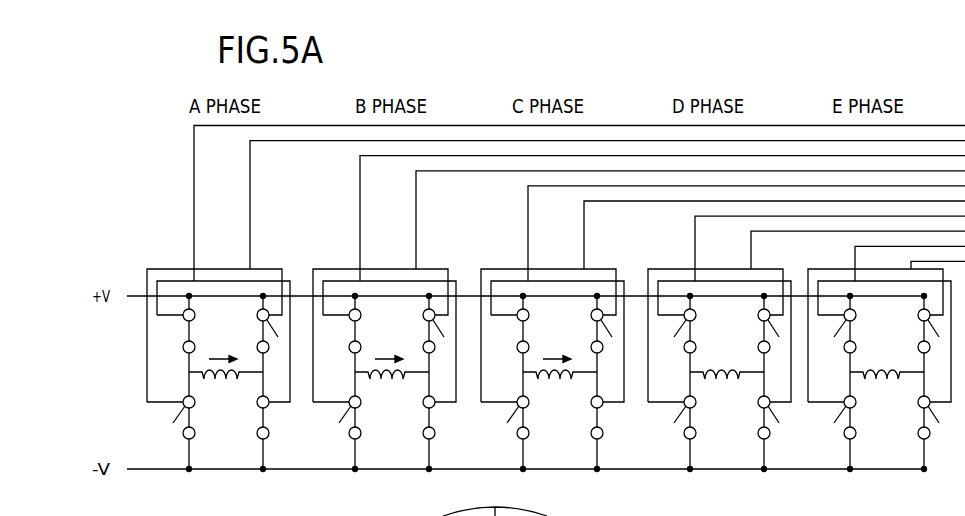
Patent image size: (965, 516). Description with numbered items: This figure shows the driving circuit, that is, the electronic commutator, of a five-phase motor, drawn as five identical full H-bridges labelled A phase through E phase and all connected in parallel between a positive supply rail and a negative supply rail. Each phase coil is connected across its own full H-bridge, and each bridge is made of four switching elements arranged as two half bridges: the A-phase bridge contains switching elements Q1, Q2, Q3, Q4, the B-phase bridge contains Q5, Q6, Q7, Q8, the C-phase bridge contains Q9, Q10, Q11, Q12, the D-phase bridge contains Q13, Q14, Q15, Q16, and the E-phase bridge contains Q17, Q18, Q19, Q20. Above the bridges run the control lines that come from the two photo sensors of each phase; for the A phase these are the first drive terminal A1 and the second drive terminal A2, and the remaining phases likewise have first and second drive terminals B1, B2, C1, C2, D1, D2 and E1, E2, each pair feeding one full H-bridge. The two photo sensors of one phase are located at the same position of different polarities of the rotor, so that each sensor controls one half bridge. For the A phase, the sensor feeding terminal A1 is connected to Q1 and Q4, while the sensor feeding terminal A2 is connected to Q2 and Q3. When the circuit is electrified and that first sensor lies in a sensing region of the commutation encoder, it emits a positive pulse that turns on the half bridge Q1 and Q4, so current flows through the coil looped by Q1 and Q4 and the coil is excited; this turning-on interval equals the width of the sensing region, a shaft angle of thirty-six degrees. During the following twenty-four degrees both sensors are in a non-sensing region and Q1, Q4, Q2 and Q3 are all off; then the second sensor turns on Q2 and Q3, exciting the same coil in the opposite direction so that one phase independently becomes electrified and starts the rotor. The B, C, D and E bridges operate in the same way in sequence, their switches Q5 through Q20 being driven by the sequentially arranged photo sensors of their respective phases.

The phase A first drive terminal A1 is at (570, 204).
The phase A second drive terminal A2 is at (598, 205).
The phase B first drive terminal B1 is at (653, 218).
The phase B second drive terminal B2 is at (681, 220).
The phase C first drive terminal C1 is at (737, 233).
The phase C second drive terminal C2 is at (765, 235).
The phase D first drive terminal D1 is at (820, 248).
The phase D second drive terminal D2 is at (848, 250).
The phase E first drive terminal E1 is at (901, 263).
The phase E second drive terminal E2 is at (929, 259).
The switching element Q1 is at (179, 334).
The switching element Q2 is at (258, 334).
The switching element Q3 is at (179, 420).
The switching element Q4 is at (253, 420).
The switching element Q5 is at (345, 334).
The switching element Q6 is at (424, 334).
The switching element Q7 is at (345, 420).
The switching element Q8 is at (419, 420).
The switching element Q9 is at (513, 334).
The switching element Q10 is at (589, 334).
The switching element Q11 is at (511, 420).
The switching element Q12 is at (585, 420).
The switching element Q13 is at (678, 334).
The switching element Q14 is at (756, 334).
The switching element Q15 is at (678, 420).
The switching element Q16 is at (756, 420).
The switching element Q17 is at (838, 334).
The switching element Q18 is at (916, 334).
The switching element Q19 is at (838, 420).
The switching element Q20 is at (916, 420).